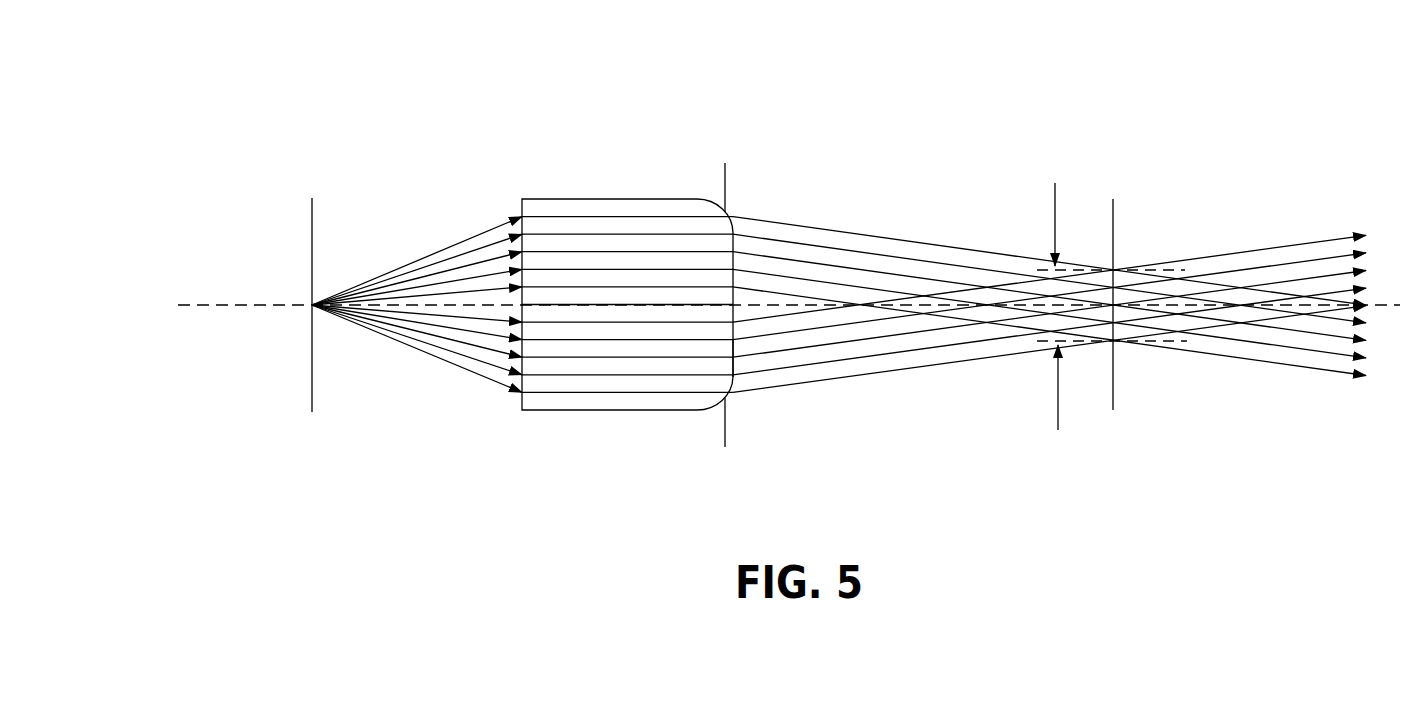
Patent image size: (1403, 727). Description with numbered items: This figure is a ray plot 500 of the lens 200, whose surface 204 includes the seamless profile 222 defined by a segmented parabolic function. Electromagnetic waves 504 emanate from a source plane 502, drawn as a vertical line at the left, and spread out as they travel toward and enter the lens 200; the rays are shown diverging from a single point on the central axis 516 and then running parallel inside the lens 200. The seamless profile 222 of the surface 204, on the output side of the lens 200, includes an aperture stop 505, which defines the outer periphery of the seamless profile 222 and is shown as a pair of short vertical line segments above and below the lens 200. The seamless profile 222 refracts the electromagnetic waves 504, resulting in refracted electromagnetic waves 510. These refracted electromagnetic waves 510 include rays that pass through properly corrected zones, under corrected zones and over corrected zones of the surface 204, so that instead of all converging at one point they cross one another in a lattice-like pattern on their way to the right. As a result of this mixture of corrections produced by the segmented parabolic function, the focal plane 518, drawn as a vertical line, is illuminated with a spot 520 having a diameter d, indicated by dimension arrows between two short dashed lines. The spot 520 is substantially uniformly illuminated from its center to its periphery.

The optical system 500 is at (227, 64).
The source plane 502 is at (313, 215).
The electromagnetic waves 504 is at (394, 245).
The lens 200 is at (642, 197).
The surface 204 is at (742, 243).
The seamless profile 222 is at (737, 352).
The aperture stop 505 is at (723, 178).
The refracted electromagnetic waves 510 is at (962, 238).
The optical axis 516 is at (213, 302).
The focal plane 518 is at (1114, 223).
The spot 520 is at (1057, 390).
The diameter d is at (1112, 250).